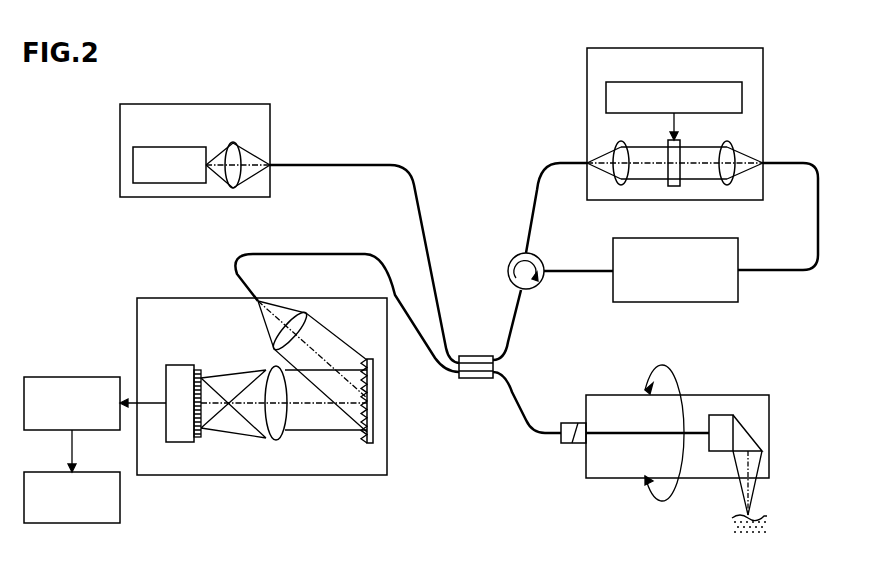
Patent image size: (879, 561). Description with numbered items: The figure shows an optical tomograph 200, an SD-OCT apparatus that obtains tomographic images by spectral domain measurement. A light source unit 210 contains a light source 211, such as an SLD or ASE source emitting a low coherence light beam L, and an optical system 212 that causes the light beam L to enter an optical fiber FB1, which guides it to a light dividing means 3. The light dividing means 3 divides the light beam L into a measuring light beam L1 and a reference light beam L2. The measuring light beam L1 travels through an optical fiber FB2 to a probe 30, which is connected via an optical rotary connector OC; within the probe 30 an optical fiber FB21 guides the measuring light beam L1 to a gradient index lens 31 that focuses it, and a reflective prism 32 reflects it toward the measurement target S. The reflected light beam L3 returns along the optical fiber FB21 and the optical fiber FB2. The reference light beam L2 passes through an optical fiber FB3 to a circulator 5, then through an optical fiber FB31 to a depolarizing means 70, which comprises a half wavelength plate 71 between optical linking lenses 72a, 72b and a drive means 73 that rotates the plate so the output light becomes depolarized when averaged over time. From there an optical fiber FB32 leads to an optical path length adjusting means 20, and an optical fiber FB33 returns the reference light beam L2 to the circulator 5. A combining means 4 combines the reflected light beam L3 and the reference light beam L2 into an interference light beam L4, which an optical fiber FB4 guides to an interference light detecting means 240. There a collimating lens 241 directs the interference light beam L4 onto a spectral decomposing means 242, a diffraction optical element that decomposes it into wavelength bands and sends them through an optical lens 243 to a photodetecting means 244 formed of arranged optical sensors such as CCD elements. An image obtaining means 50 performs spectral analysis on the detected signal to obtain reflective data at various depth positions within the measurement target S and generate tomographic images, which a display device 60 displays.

The optical tomograph 200 is at (490, 76).
The light source unit 210 is at (257, 98).
The light source 211 is at (145, 147).
The optical system 212 is at (235, 143).
The light beam L is at (303, 175).
The optical fiber FB1 is at (333, 162).
The optical fiber FB2 is at (524, 433).
The optical fiber FB3 is at (529, 325).
The optical fiber FB4 is at (282, 253).
The optical fiber FB21 is at (647, 424).
The optical fiber FB31 is at (566, 148).
The optical fiber FB32 is at (816, 217).
The optical fiber FB33 is at (586, 268).
The measuring light beam L1 is at (517, 378).
The reference light beam L2 is at (510, 298).
The reflected light beam L3 is at (502, 390).
The interference light beam L4 is at (338, 247).
The light dividing means 3 is at (472, 385).
The combining means 4 is at (476, 380).
The circulator 5 is at (507, 271).
The depolarizing means 70 is at (765, 141).
The ½ wavelength plate 71 is at (672, 187).
The optical linking lens 72a is at (621, 186).
The optical linking lens 72b is at (727, 186).
The drive means 73 is at (730, 82).
The optical path length adjusting means 20 is at (679, 303).
The probe 30 is at (769, 411).
The gradient index lens 31 is at (723, 415).
The reflective prism 32 is at (757, 437).
The optical rotary connector OC is at (572, 423).
The measurement target S is at (764, 515).
The interference light detecting means 240 is at (387, 400).
The collimating lens 241 is at (309, 314).
The spectral decomposing means 242 is at (368, 358).
The optical lens 243 is at (276, 441).
The photodetecting means 244 is at (181, 365).
The image obtaining means 50 is at (37, 377).
The display device 60 is at (37, 472).